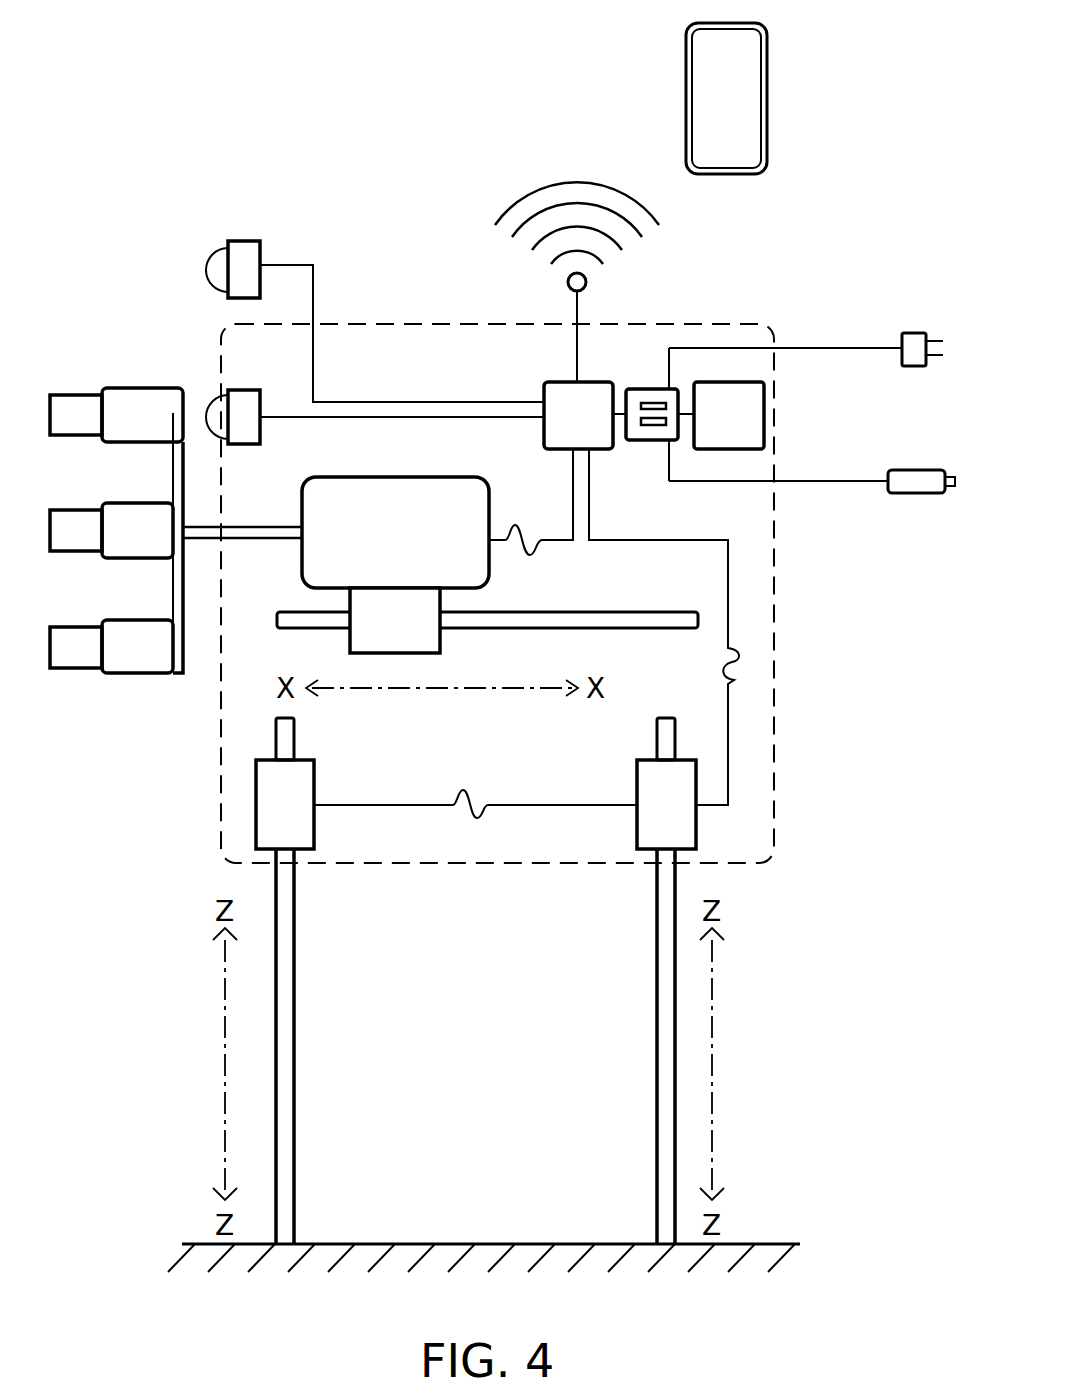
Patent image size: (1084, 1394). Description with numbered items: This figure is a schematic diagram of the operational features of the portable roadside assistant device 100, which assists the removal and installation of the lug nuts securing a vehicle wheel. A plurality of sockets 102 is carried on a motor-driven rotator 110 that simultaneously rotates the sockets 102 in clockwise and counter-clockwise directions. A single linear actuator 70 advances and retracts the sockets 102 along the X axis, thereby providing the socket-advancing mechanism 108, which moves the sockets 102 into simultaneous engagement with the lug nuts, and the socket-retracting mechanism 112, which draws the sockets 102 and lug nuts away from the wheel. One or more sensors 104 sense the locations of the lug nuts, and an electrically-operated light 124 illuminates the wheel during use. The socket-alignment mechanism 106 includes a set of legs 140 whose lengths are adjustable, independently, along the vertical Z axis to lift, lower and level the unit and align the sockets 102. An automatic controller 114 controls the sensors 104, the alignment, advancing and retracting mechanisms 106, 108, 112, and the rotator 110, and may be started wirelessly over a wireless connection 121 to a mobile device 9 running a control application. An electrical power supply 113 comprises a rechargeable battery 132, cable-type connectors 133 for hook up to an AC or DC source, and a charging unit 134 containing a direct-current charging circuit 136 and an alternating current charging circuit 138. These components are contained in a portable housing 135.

The mobile device 9 is at (767, 58).
The portable roadside assistant device 100 is at (198, 90).
The linear actuator 70 is at (440, 632).
The sockets 102 is at (72, 410).
The sensors 104 is at (252, 437).
The socket-alignment mechanism 106 is at (586, 890).
The socket-advancing mechanism 108 is at (636, 592).
The motor-driven rotator 110 is at (145, 402).
The socket-retracting mechanism 112 is at (666, 599).
The electrical power supply 113 is at (731, 330).
The automatic controller 114 is at (545, 384).
The wireless connection 121 is at (577, 313).
The electrically-operated light 124 is at (222, 255).
The rechargeable battery 132 is at (764, 408).
The cable-type connector 133 is at (900, 333).
The charging unit 134 is at (648, 389).
The portable housing 135 is at (774, 817).
The direct-current charging circuit 136 is at (652, 403).
The alternating current charging circuit 138 is at (650, 426).
The legs 140 is at (657, 1146).